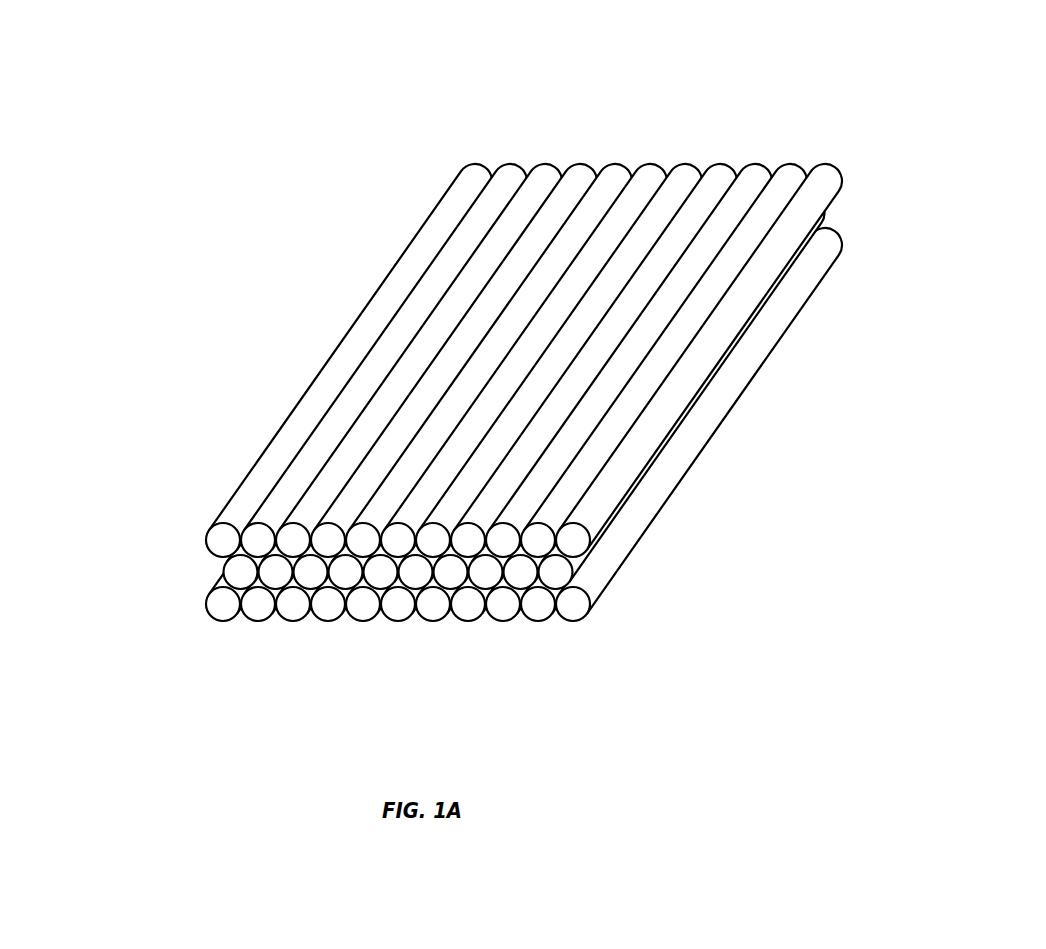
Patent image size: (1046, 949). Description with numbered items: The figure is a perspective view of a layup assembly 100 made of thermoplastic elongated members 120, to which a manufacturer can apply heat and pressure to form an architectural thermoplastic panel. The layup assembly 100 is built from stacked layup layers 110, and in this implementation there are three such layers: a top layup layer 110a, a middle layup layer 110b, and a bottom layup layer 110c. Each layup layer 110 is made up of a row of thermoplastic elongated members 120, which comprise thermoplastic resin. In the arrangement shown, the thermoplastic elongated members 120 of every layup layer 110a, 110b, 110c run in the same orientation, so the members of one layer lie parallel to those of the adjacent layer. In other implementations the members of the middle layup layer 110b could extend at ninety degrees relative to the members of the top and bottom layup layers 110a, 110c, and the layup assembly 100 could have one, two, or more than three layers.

The layup assembly 100 is at (458, 333).
The layup layer 110 is at (432, 392).
The top layup layer 110a is at (470, 360).
The middle layup layer 110b is at (210, 570).
The bottom layup layer 110c is at (196, 602).
The thermoplastic elongated member 120 is at (573, 535).